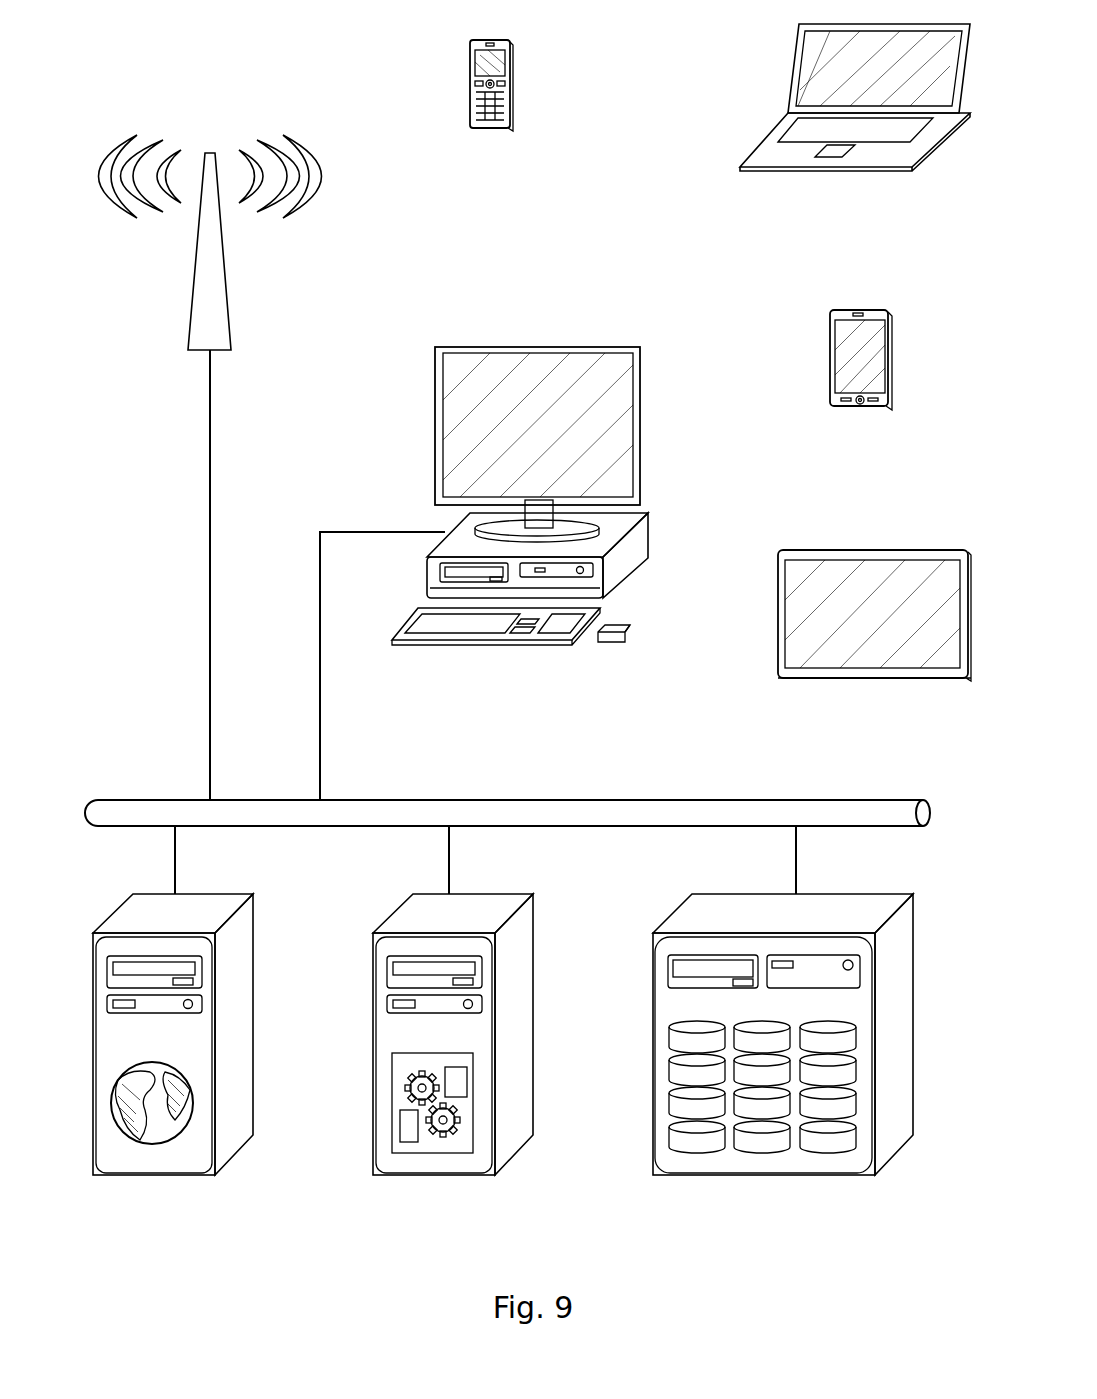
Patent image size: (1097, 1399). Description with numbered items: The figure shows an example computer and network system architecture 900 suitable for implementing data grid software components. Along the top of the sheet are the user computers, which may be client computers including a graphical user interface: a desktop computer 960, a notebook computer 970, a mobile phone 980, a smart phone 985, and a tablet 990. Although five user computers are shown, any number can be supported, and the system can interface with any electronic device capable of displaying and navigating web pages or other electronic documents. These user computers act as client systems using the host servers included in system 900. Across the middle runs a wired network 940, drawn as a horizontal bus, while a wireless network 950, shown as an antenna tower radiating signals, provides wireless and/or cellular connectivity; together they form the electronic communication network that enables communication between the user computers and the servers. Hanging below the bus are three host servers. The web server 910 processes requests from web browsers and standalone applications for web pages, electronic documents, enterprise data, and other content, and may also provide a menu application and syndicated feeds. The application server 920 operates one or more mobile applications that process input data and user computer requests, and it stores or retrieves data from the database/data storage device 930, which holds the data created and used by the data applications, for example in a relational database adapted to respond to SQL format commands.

The computer and network system architecture 900 is at (165, 50).
The web server 910 is at (160, 1163).
The application server 920 is at (433, 1163).
The database/data storage device 930 is at (752, 1160).
The wired network 940 is at (507, 622).
The wireless network 950 is at (235, 250).
The desktop computer 960 is at (517, 655).
The notebook computer 970 is at (847, 180).
The mobile phone 980 is at (496, 148).
The smart phone 985 is at (867, 423).
The tablet 990 is at (868, 683).